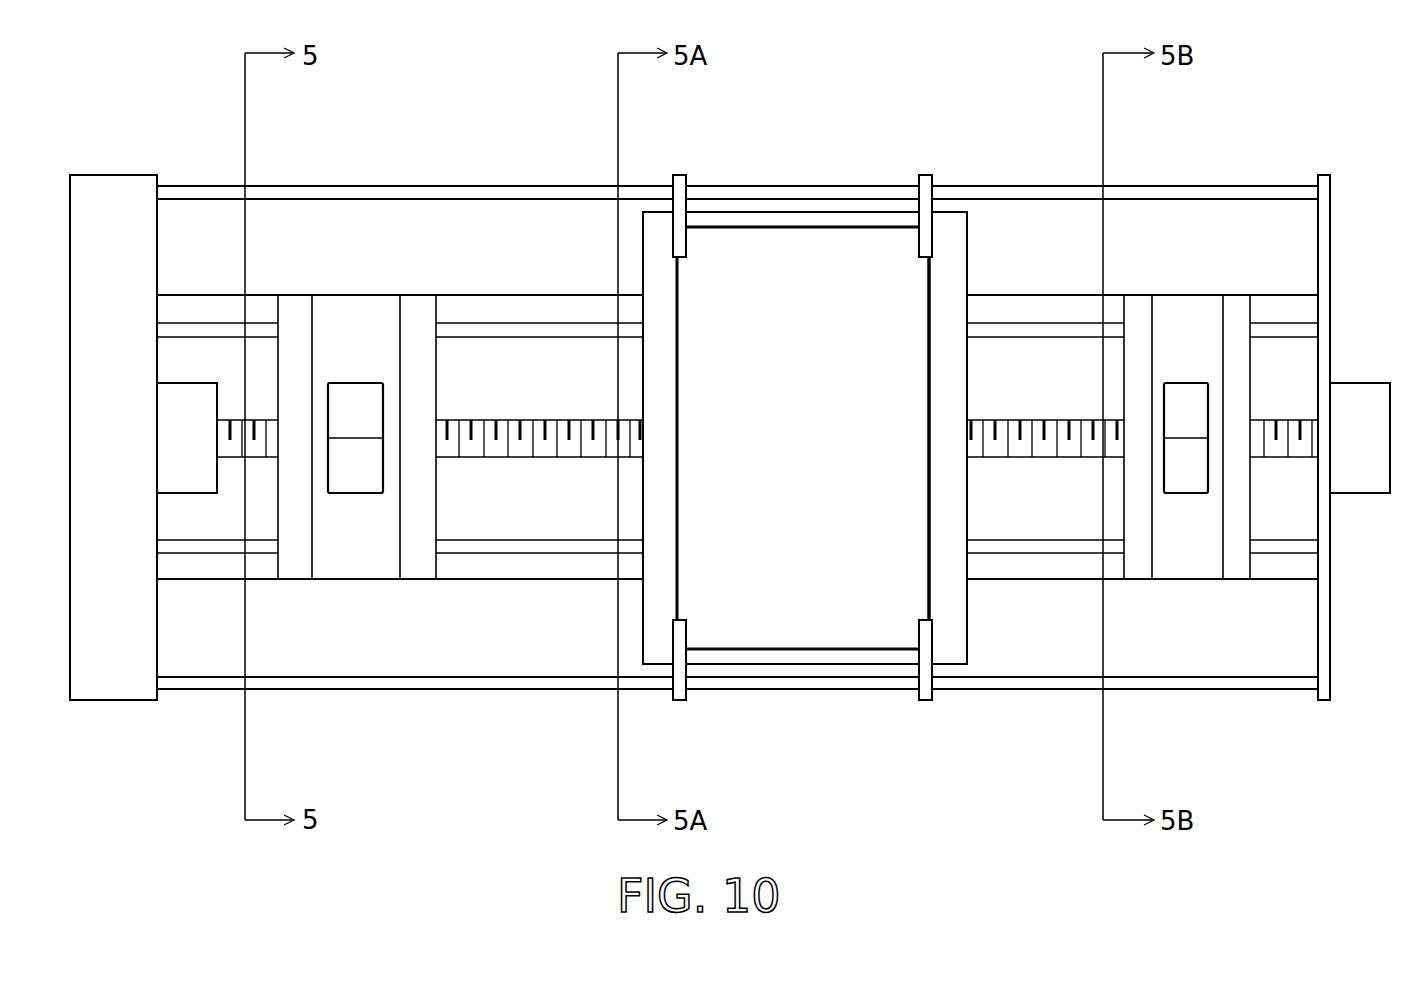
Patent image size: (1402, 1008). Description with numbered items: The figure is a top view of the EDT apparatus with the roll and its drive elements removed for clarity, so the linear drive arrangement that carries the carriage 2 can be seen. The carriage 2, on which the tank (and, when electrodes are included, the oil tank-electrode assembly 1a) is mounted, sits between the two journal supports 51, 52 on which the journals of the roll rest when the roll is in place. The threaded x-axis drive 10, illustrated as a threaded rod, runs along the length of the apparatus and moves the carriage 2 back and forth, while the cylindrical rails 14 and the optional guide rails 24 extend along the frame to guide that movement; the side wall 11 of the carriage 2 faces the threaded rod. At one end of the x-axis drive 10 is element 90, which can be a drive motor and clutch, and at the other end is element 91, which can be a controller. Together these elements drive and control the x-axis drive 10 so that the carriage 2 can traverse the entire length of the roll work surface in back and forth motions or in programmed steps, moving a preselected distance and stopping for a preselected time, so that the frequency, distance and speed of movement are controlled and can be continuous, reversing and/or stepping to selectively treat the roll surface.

The carrier 1a is at (738, 220).
The carriage 2 is at (953, 225).
The x-axis drive 10 is at (527, 437).
The side wall of carrier 11 is at (930, 465).
The cylindrical rails 14 is at (512, 330).
The guide rails 24 is at (297, 190).
The journal support 51 is at (355, 395).
The journal support 52 is at (1183, 395).
The drive motor and clutch 90 is at (1360, 438).
The controller 91 is at (187, 438).